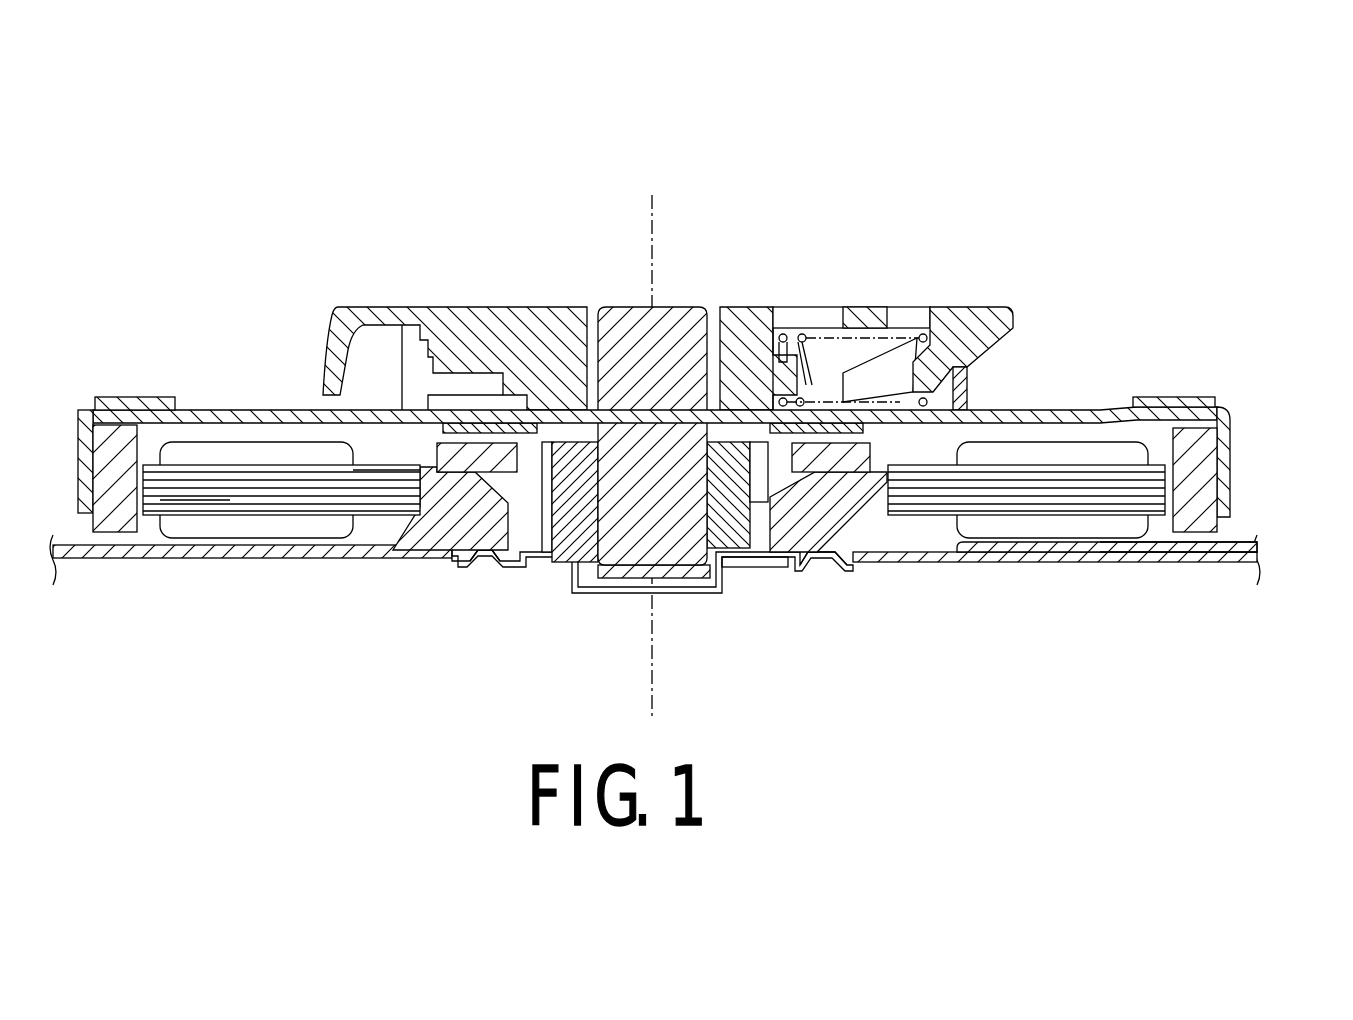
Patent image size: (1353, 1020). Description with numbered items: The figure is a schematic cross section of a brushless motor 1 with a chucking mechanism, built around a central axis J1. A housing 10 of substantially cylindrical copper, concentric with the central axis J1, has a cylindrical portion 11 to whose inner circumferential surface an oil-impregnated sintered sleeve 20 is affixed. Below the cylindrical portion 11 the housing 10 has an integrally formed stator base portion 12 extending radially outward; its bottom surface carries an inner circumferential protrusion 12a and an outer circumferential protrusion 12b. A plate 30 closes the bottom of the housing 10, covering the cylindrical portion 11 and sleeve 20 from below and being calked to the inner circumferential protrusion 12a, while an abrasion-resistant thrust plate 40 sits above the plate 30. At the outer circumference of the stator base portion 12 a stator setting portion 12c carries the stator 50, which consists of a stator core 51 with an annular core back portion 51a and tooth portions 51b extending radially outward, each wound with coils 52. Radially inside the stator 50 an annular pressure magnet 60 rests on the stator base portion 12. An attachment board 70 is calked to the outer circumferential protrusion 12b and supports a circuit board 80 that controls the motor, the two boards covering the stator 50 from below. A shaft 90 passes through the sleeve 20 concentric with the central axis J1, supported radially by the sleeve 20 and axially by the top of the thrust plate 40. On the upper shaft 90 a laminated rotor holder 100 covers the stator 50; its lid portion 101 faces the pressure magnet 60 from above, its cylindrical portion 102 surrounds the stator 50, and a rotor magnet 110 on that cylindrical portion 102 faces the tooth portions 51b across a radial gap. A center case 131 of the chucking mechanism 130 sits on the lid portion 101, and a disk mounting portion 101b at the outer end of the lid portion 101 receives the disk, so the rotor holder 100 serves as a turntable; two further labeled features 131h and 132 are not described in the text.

The brushless motor 1 is at (125, 113).
The central axis J1 is at (655, 212).
The housing 10 is at (485, 557).
The cylindrical portion 11 is at (520, 548).
The stator base portion 12 is at (915, 562).
The inner circumferential protrusion 12a is at (770, 570).
The outer circumferential protrusion 12b is at (847, 570).
The stator setting portion 12c is at (417, 555).
The sleeve 20 is at (572, 556).
The plate 30 is at (610, 594).
The thrust plate 40 is at (690, 592).
The stator 50 is at (268, 433).
The stator core 51 is at (208, 465).
The core back portion 51a is at (374, 470).
The tooth portions 51b is at (207, 500).
The coils 52 is at (233, 452).
The pressure magnet 60 is at (473, 468).
The attachment board 70 is at (1035, 563).
The circuit board 80 is at (1127, 563).
The shaft 90 is at (627, 306).
The rotor holder 100 is at (1097, 406).
The lid portion 101 is at (1043, 408).
The disk mounting portion 101b is at (1187, 397).
The cylindrical portion 102 is at (1228, 454).
The rotor magnet 110 is at (113, 533).
The chucking mechanism 130 is at (862, 306).
The center case 131 is at (748, 306).
The hole 131h is at (970, 392).
The rotor rim 132 is at (960, 306).